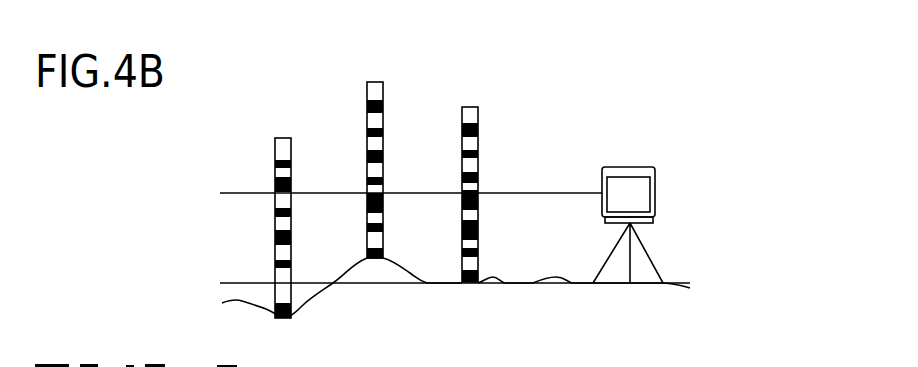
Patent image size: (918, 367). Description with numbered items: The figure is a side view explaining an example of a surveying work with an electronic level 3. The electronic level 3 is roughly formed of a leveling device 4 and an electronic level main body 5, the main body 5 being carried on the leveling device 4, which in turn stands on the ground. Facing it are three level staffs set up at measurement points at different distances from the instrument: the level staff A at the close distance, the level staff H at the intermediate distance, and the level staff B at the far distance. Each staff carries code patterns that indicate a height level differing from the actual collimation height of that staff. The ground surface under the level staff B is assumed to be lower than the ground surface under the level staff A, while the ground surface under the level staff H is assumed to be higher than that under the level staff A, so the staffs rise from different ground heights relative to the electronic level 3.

The level staff B is at (279, 140).
The level staff H is at (378, 82).
The level staff A is at (469, 107).
The electronic level 3 is at (637, 160).
The electronic level main body 5 is at (637, 198).
The leveling device 4 is at (643, 223).